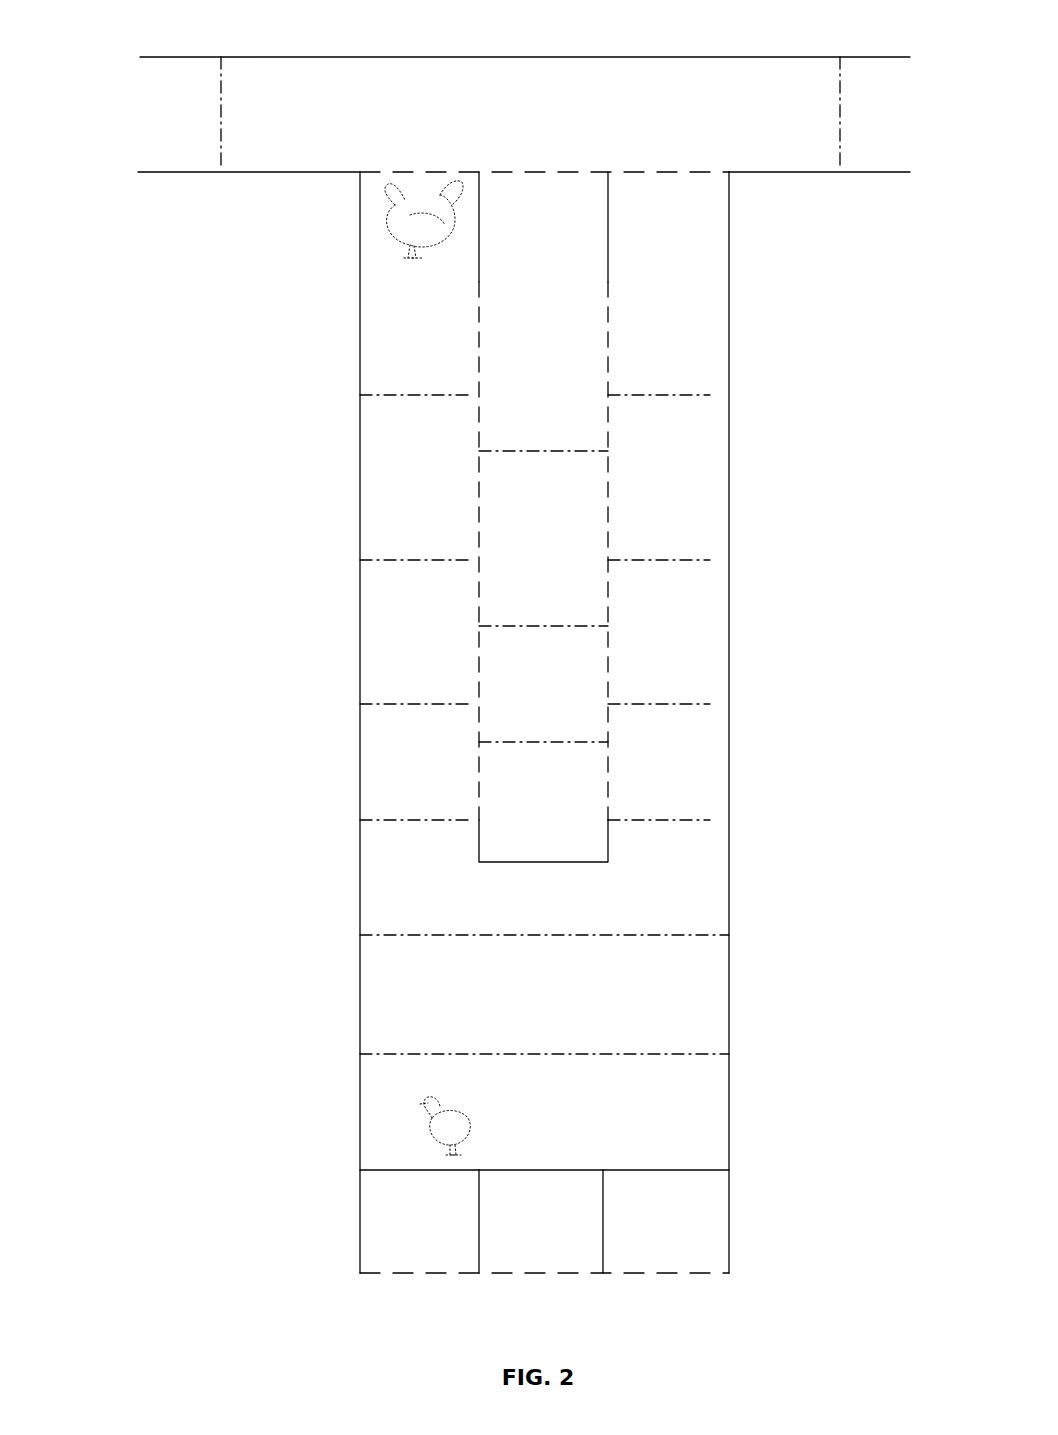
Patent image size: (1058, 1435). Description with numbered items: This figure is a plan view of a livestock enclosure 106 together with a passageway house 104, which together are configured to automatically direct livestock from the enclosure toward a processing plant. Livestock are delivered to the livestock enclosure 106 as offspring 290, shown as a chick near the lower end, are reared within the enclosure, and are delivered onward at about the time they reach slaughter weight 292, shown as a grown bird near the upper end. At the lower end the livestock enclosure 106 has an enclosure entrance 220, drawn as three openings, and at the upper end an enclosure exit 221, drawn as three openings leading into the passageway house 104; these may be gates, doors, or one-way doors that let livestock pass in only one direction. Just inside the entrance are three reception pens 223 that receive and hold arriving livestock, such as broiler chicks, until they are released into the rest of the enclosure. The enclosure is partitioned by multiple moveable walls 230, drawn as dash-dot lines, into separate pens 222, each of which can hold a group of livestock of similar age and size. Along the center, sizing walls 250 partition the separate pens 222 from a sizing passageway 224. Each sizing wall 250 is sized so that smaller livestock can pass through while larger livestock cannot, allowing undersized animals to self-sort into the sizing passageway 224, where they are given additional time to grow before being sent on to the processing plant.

The passageway house 104 is at (589, 121).
The livestock enclosure 106 is at (186, 612).
The enclosure entrance 220 is at (432, 1273).
The enclosure exit 221 is at (418, 172).
The separate pens 222 is at (441, 317).
The reception pens 223 is at (443, 1232).
The sizing passageway 224 is at (564, 357).
The moveable walls 230 is at (221, 74).
The sizing wall 250 is at (479, 320).
The offspring 290 is at (424, 1128).
The slaughter weight 292 is at (383, 216).